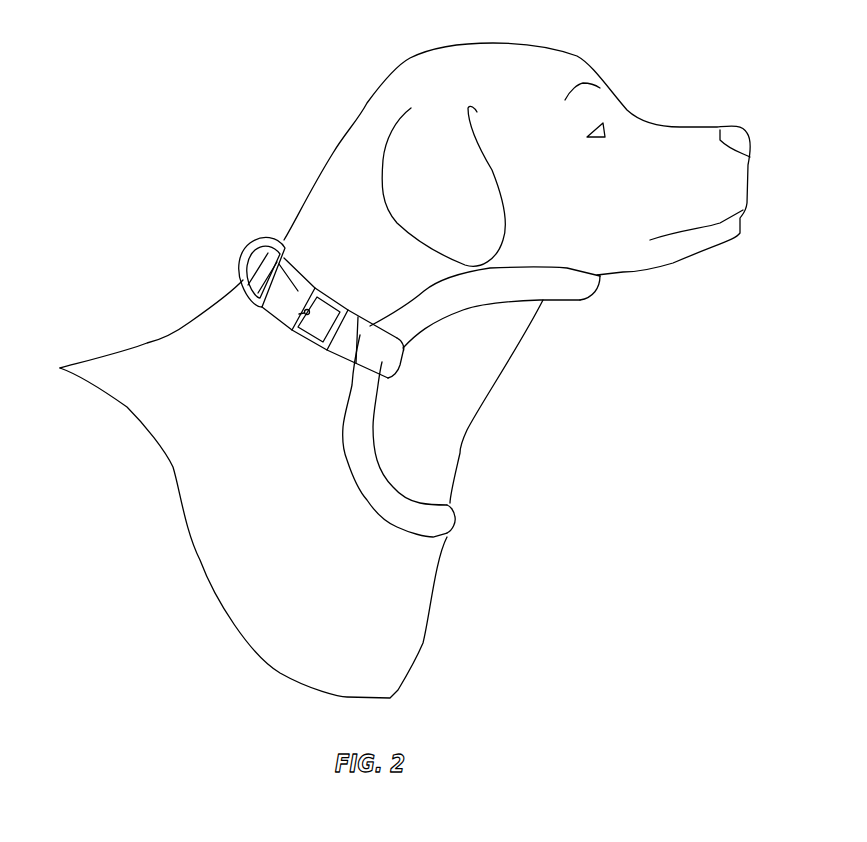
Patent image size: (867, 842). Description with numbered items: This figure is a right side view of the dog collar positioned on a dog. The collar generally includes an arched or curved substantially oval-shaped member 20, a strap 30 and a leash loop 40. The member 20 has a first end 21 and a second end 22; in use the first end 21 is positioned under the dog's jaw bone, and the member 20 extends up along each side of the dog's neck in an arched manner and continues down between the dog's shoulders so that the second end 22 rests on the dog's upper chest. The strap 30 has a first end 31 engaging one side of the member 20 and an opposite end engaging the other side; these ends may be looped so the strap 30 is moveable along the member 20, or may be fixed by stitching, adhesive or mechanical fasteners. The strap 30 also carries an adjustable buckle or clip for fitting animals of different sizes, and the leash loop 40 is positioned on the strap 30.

The member 20 is at (353, 462).
The first end 21 is at (580, 293).
The second end 22 is at (445, 528).
The strap 30 is at (333, 334).
The first end 31 is at (378, 363).
The leash loop 40 is at (241, 253).